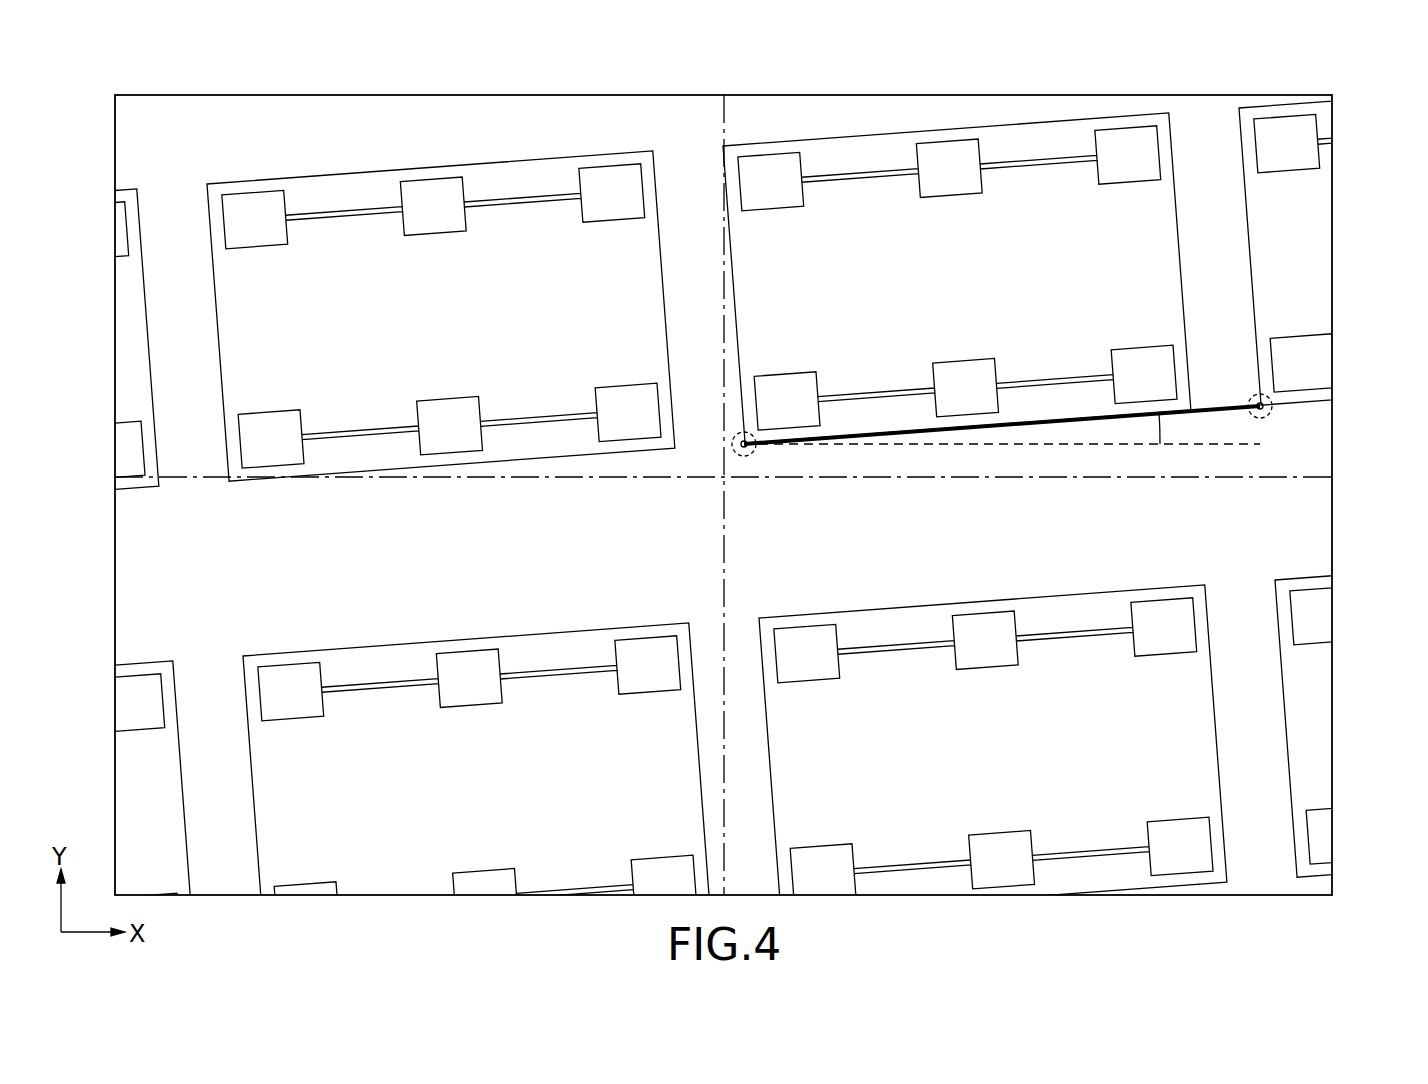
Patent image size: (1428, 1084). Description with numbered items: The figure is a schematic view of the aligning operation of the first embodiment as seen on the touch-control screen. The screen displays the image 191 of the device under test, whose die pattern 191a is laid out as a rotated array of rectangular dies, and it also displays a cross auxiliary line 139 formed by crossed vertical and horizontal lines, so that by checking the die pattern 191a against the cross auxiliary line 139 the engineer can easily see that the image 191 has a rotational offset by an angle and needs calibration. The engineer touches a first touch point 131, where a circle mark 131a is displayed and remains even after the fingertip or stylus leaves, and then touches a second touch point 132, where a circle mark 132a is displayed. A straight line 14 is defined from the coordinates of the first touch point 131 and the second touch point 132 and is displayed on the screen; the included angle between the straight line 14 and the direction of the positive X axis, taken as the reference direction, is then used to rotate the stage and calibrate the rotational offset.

The straight line 14 is at (978, 428).
The first touch point 131 is at (751, 455).
The circle mark 131a is at (737, 456).
The second touch point 132 is at (1270, 410).
The circle mark 132a is at (1251, 417).
The cross auxiliary line 139 is at (724, 98).
The image 191 is at (115, 95).
The die pattern 191a is at (472, 323).